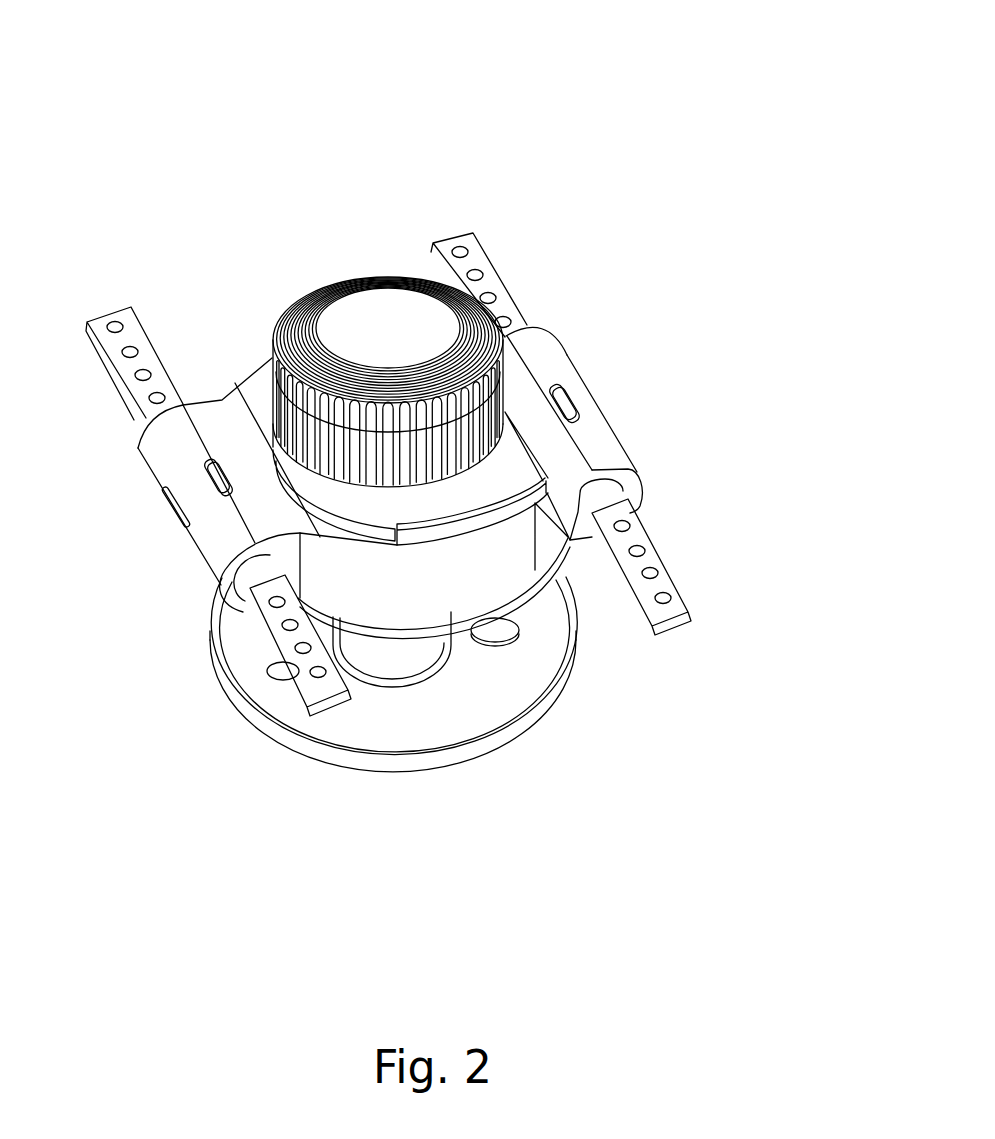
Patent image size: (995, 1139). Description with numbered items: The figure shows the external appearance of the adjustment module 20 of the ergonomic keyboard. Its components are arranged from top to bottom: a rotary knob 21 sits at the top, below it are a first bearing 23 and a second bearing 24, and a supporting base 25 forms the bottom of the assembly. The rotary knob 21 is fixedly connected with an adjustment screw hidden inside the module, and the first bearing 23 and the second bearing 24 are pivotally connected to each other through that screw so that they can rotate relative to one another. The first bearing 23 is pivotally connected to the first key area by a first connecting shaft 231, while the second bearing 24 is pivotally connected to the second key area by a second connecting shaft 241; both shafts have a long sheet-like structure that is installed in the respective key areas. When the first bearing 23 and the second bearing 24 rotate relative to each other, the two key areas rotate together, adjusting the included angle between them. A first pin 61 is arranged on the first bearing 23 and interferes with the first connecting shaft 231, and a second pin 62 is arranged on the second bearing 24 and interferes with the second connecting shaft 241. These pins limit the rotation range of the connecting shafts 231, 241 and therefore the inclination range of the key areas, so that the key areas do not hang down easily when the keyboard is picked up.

The adjustment module 20 is at (652, 85).
The rotary knob 21 is at (360, 277).
The first bearing 23 is at (597, 408).
The first connecting shaft 231 is at (678, 630).
The second bearing 24 is at (217, 548).
The second connecting shaft 241 is at (128, 312).
The supporting base 25 is at (433, 763).
The first pin 61 is at (563, 383).
The second pin 62 is at (206, 472).